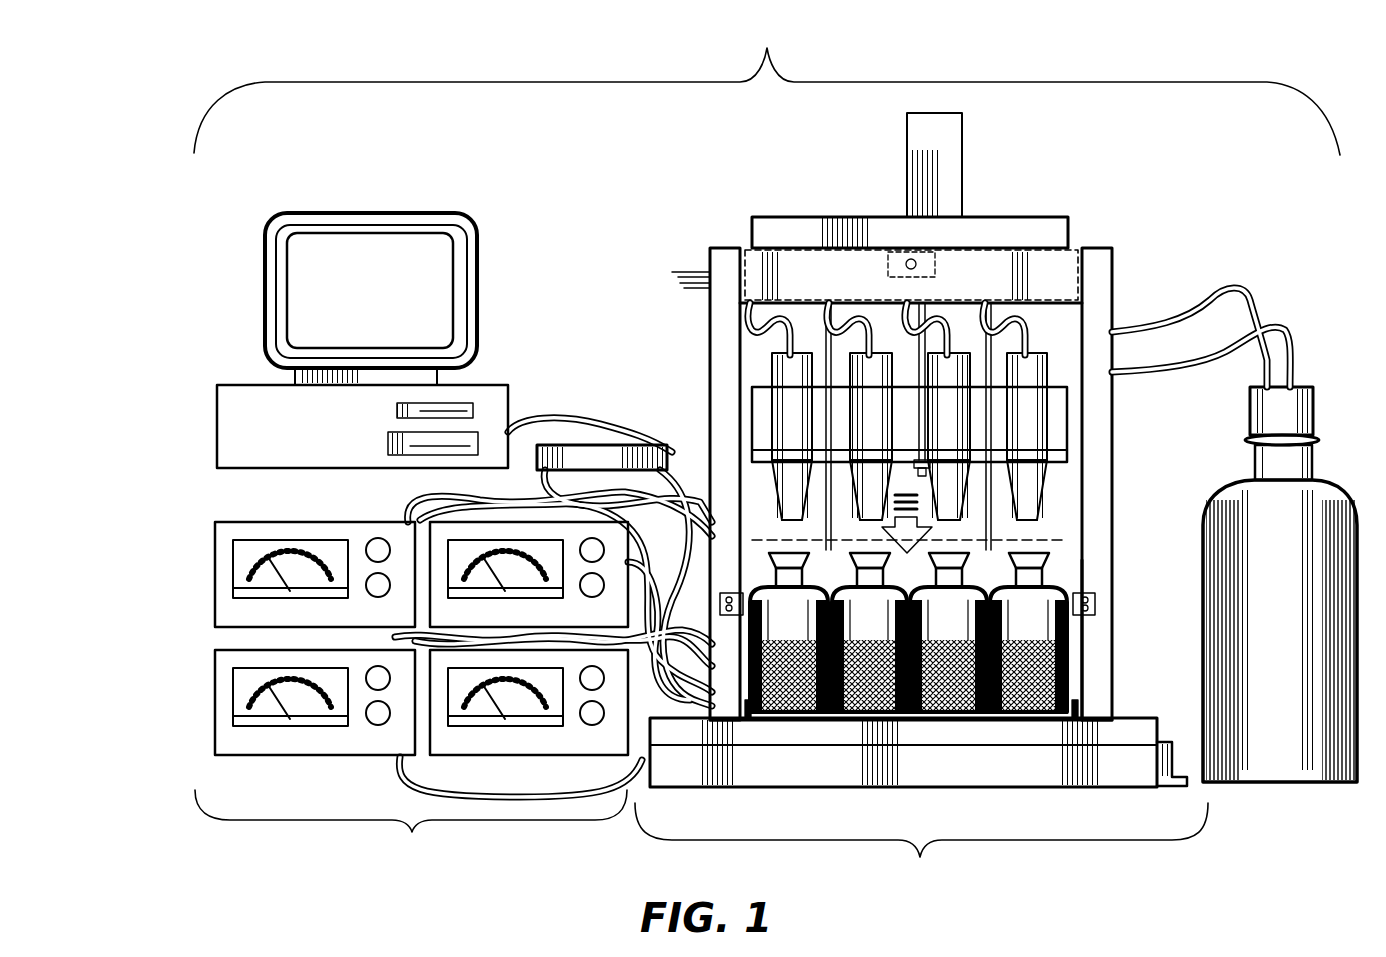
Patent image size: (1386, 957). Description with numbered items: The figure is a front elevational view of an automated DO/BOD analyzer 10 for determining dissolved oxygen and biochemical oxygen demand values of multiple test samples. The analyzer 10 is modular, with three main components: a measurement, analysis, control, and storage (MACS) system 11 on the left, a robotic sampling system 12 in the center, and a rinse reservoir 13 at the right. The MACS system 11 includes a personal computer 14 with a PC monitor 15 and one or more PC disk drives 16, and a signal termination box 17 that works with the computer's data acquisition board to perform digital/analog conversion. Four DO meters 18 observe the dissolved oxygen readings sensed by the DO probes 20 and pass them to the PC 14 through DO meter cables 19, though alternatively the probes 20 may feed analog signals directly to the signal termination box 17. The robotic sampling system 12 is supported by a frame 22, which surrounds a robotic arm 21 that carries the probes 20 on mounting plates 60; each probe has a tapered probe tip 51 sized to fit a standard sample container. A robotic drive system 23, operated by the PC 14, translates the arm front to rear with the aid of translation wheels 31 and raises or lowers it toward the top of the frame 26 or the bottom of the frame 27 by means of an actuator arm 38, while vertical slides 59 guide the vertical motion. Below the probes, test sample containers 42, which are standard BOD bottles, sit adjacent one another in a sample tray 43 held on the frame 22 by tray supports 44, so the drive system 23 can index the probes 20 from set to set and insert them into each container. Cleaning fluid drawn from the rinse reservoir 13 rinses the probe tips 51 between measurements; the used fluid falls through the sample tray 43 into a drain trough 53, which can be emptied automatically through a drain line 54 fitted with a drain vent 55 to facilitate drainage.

The automated DO/BOD analyzer 10 is at (767, 87).
The MACS system 11 is at (411, 826).
The robotic sampling system 12 is at (921, 848).
The rinse reservoir 13 is at (1335, 784).
The personal computer 14 is at (248, 385).
The PC monitor 15 is at (332, 213).
The PC disk drives 16 is at (455, 403).
The signal termination box 17 is at (590, 445).
The DO meters 18 is at (288, 522).
The DO meter cables 19 is at (400, 498).
The DO probes 20 is at (785, 372).
The robotic arm 21 is at (1067, 405).
The frame 22 is at (1112, 250).
The robotic drive system 23 is at (888, 217).
The top of the frame 26 is at (710, 252).
The bottom of the frame 27 is at (1100, 698).
The translation wheels 31 is at (750, 252).
The actuator arm 38 is at (960, 303).
The test sample containers 42 is at (1040, 580).
The sample tray 43 is at (1060, 715).
The tray supports 44 is at (778, 718).
The probe tips 51 is at (790, 490).
The drain trough 53 is at (704, 768).
The drain line 54 is at (1186, 786).
The drain vent 55 is at (1174, 746).
The vertical slides 59 is at (720, 580).
The mounting plates 60 is at (1080, 380).